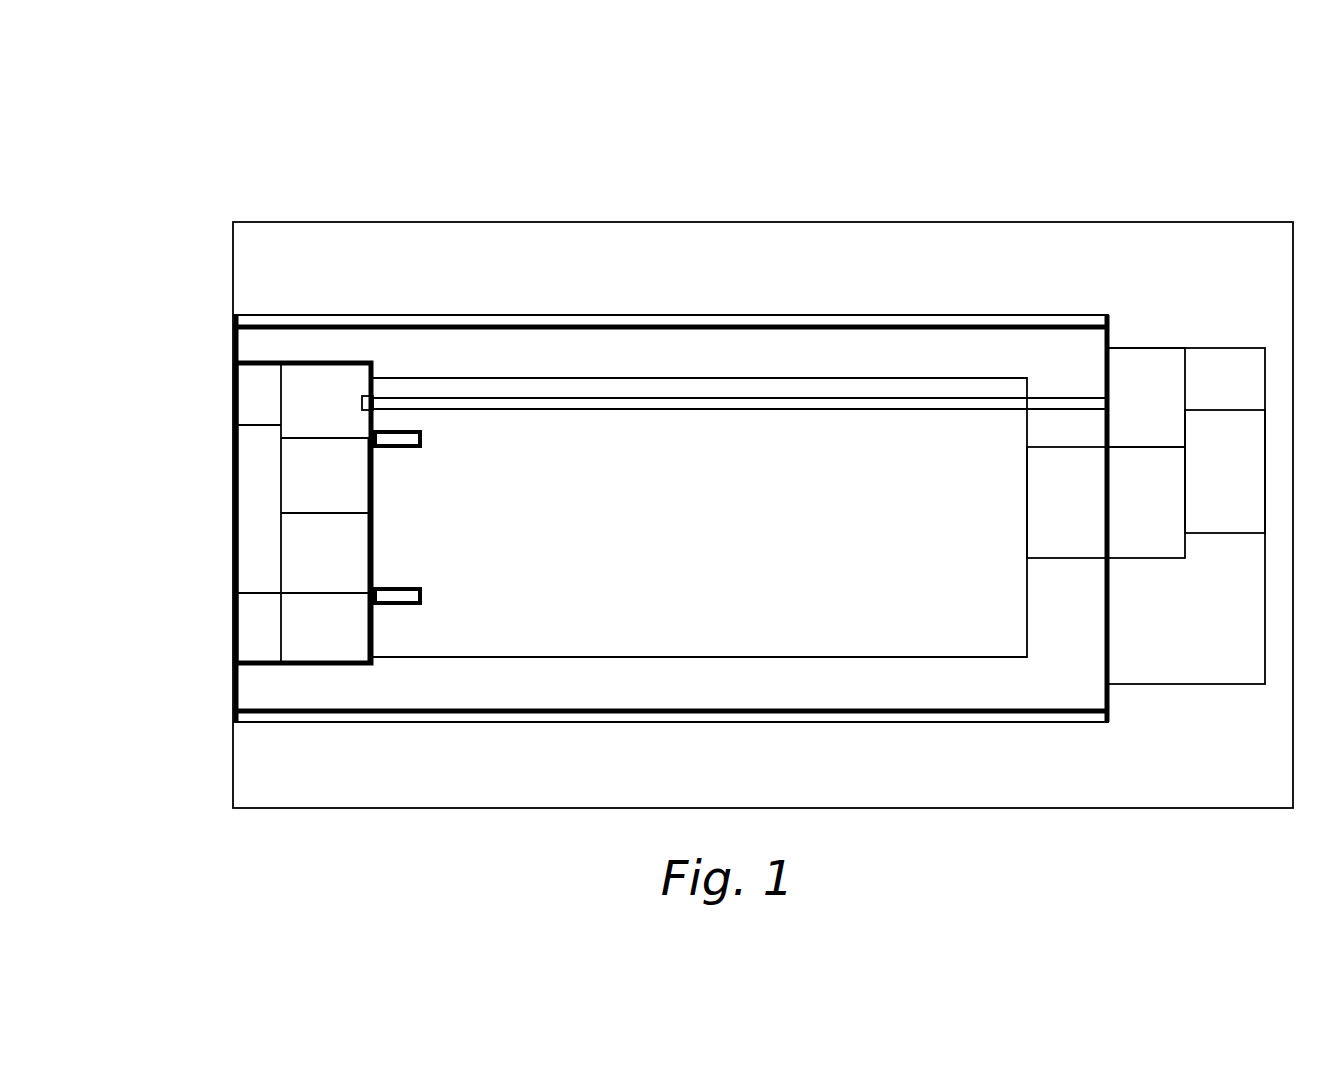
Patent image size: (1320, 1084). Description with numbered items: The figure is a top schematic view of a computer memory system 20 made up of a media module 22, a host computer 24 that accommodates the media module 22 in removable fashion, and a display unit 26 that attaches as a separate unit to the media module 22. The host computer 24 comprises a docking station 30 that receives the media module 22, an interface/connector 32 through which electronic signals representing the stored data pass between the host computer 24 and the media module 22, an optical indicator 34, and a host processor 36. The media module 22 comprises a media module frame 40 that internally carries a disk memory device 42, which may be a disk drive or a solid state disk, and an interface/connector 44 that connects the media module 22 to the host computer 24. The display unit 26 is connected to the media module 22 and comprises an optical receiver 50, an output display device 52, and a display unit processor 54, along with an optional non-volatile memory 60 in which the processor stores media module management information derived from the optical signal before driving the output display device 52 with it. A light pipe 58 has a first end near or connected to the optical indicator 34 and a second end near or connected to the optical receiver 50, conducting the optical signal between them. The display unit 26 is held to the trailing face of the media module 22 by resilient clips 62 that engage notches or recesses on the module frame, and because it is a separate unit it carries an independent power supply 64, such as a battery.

The computer memory system 20 is at (940, 165).
The media module 22 is at (678, 325).
The host computer 24 is at (1080, 221).
The display unit 26 is at (233, 413).
The docking station 30 is at (978, 315).
The interface/connector 32 is at (1147, 559).
The optical indicator 34 is at (1140, 348).
The host processor 36 is at (1206, 410).
The media module frame 40 is at (792, 350).
The disk memory device 42 is at (985, 636).
The interface/connector 44 is at (1068, 559).
The optical receiver 50 is at (328, 363).
The output display device 52 is at (233, 525).
The display unit processor 54 is at (372, 480).
The light pipe 58 is at (1047, 405).
The memory 60 is at (372, 556).
The resilient clips 62 is at (425, 438).
The power supply 64 is at (372, 630).